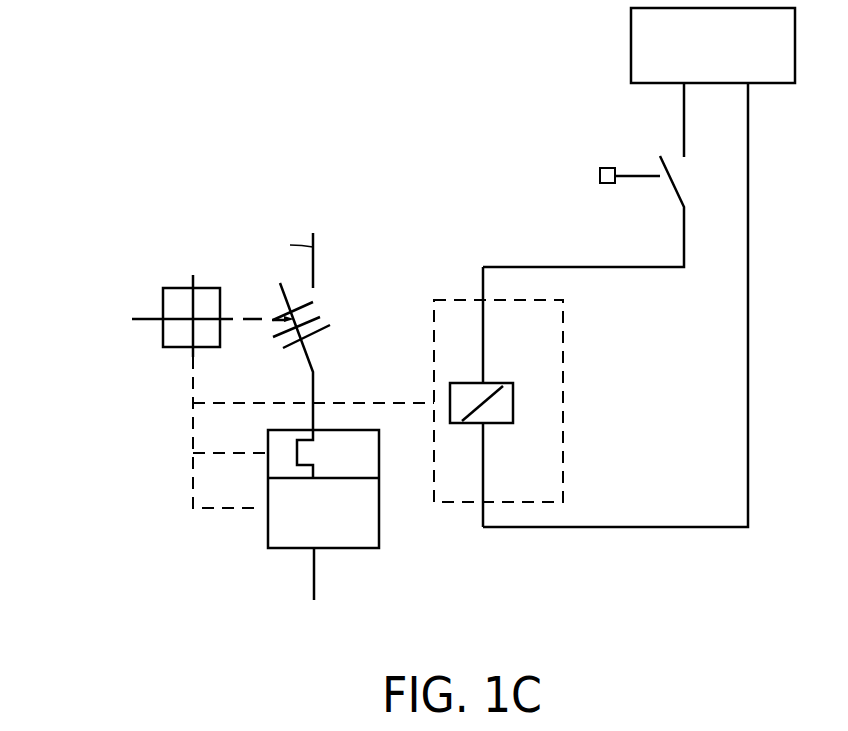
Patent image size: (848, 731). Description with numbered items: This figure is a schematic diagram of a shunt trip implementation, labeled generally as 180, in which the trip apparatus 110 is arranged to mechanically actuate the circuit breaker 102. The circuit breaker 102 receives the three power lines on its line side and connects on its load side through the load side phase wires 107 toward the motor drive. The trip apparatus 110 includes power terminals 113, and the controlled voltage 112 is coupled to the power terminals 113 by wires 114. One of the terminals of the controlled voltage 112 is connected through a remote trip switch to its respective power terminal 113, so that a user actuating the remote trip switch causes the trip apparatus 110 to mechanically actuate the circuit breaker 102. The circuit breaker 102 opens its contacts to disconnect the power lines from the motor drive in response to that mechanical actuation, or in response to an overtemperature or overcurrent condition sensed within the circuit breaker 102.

The circuit breaker system 180 is at (122, 116).
The controlled voltage 112 is at (631, 44).
The wires 114 is at (521, 267).
The power terminals 113 is at (483, 293).
The trip apparatus 110 is at (565, 370).
The circuit breaker 102 is at (157, 530).
The load side phase wires 107 is at (314, 592).